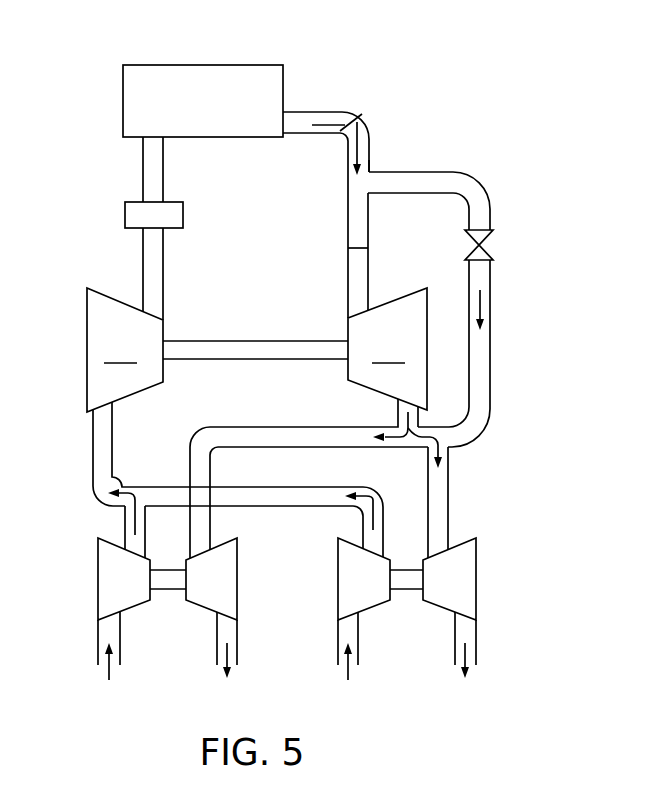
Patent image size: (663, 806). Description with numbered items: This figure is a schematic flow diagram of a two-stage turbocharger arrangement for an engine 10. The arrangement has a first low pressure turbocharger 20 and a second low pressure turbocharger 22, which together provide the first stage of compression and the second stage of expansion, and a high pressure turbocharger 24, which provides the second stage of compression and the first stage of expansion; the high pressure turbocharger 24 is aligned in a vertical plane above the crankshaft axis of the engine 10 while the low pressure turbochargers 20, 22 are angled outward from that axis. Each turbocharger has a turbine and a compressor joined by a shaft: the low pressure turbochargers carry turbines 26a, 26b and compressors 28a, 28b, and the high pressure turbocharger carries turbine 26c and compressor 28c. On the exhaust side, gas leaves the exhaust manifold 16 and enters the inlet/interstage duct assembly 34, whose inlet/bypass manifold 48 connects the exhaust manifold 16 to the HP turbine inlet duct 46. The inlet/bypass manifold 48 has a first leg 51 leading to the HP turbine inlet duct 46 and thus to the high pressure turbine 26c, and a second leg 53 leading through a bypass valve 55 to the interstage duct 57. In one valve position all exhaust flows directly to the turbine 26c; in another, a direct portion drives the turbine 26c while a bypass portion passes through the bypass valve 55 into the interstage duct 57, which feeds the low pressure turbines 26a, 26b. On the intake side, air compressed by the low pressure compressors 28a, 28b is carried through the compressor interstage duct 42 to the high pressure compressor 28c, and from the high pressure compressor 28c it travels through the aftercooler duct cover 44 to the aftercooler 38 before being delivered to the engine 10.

The engine 10 is at (205, 65).
The exhaust manifold 16 is at (314, 112).
The first low pressure turbocharger 20 is at (167, 588).
The second low pressure turbocharger 22 is at (406, 588).
The high pressure turbocharger 24 is at (226, 342).
The turbine of first low pressure turbocharger 26a is at (235, 597).
The turbine of second low pressure turbocharger 26b is at (472, 597).
The high pressure turbine 26c is at (387, 349).
The compressor of first low pressure turbocharger 28a is at (108, 597).
The compressor of second low pressure turbocharger 28b is at (340, 575).
The high pressure compressor 28c is at (125, 350).
The inlet/interstage duct assembly 34 is at (460, 263).
The aftercooler 38 is at (125, 215).
The compressor interstage duct 42 is at (300, 487).
The aftercooler duct cover 44 is at (163, 272).
The HP turbine inlet duct 46 is at (347, 272).
The inlet/bypass manifold 48 is at (370, 135).
The first leg 51 is at (347, 188).
The second leg 53 is at (487, 176).
The bypass valve 55 is at (495, 248).
The interstage duct 57 is at (492, 330).